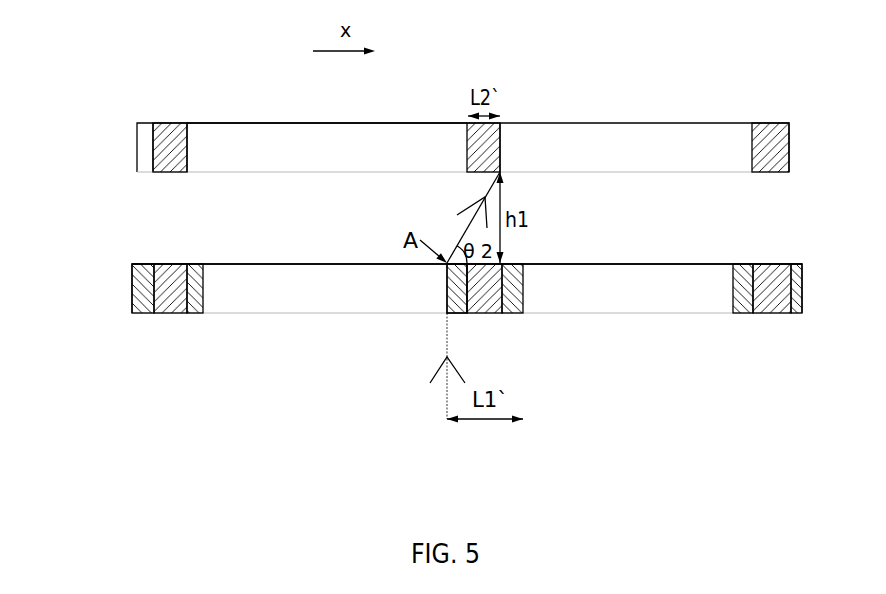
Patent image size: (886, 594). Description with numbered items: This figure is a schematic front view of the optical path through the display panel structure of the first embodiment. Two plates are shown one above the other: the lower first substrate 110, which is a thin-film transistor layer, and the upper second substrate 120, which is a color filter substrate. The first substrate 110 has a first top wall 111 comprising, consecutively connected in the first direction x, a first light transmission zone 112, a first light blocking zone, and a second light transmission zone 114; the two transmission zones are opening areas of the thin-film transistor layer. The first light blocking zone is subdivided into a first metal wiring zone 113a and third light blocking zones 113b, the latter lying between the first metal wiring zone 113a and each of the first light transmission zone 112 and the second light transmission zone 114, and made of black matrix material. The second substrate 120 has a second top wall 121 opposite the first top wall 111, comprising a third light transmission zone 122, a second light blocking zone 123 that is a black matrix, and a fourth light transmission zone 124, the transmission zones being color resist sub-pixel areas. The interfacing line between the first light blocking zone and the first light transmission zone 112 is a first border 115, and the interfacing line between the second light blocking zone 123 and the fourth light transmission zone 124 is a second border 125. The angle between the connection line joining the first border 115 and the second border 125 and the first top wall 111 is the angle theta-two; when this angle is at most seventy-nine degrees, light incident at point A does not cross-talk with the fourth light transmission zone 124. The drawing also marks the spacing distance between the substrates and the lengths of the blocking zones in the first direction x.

The first substrate 110 is at (427, 299).
The first top wall 111 is at (162, 260).
The first light transmission zone 112 is at (220, 298).
The first metal wiring zone 113a is at (460, 295).
The third light blocking zone 113b is at (477, 303).
The second light transmission zone 114 is at (677, 300).
The first border 115 is at (453, 292).
The second substrate 120 is at (421, 135).
The second top wall 121 is at (196, 173).
The third light transmission zone 122 is at (263, 138).
The second light blocking zone 123 is at (485, 142).
The fourth light transmission zone 124 is at (687, 138).
The second border 125 is at (502, 132).